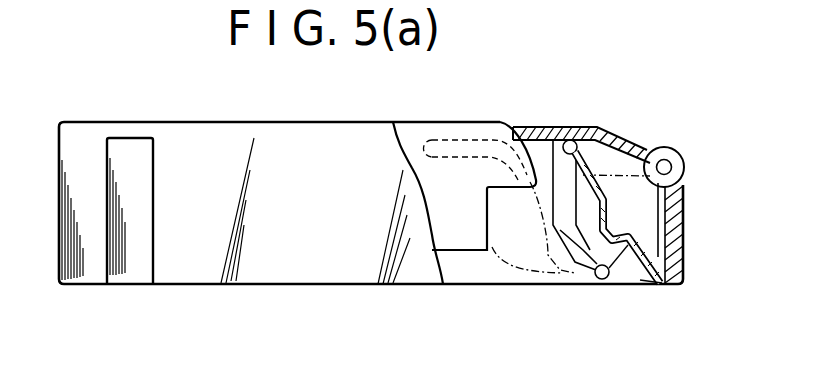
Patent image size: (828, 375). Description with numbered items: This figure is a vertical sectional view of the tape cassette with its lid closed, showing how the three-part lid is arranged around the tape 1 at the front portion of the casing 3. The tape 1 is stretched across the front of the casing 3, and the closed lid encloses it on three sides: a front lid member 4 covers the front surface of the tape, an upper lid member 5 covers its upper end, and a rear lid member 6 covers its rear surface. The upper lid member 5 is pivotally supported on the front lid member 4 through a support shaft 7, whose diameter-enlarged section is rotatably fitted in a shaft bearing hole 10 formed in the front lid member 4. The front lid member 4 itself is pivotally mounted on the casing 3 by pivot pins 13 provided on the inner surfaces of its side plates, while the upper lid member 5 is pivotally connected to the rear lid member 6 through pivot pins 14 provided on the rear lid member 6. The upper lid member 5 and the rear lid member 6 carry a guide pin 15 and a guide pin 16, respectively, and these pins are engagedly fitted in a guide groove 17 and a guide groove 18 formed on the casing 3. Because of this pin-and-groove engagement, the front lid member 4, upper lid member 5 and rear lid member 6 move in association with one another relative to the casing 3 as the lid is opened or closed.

The tape 1 is at (683, 208).
The casing 3 is at (304, 140).
The front lid member 4 is at (683, 241).
The upper lid member 5 is at (602, 129).
The rear lid member 6 is at (646, 281).
The support shaft 7 is at (672, 148).
The shaft bearing hole 10 is at (672, 160).
The pivot pins 13 is at (553, 208).
The pivot pins 14 is at (567, 141).
The guide pin 15 is at (531, 180).
The guide pin 16 is at (605, 280).
The guide groove 17 is at (443, 150).
The guide groove 18 is at (583, 253).